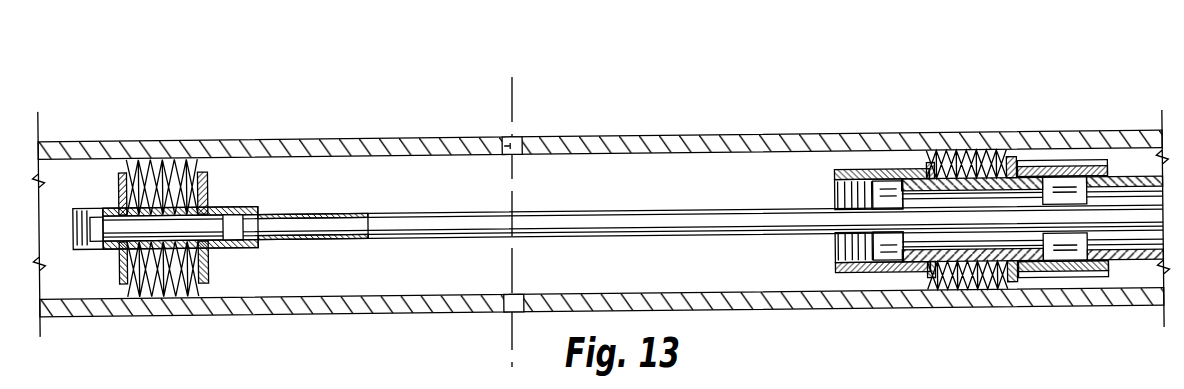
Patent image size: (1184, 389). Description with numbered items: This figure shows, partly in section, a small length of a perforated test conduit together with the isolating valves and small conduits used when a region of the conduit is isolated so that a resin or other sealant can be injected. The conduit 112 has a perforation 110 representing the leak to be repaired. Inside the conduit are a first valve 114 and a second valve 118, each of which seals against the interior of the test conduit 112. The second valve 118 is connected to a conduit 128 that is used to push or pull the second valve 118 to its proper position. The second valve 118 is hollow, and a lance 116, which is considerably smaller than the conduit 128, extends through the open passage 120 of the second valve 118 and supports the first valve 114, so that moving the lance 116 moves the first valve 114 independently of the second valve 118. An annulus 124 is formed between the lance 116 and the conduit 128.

The perforation 110 is at (500, 145).
The conduit 112 is at (97, 147).
The first valve 114 is at (160, 168).
The lance 116 is at (687, 210).
The second valve 118 is at (982, 147).
The open passage 120 is at (839, 174).
The annulus 124 is at (1117, 197).
The conduit 128 is at (1135, 183).